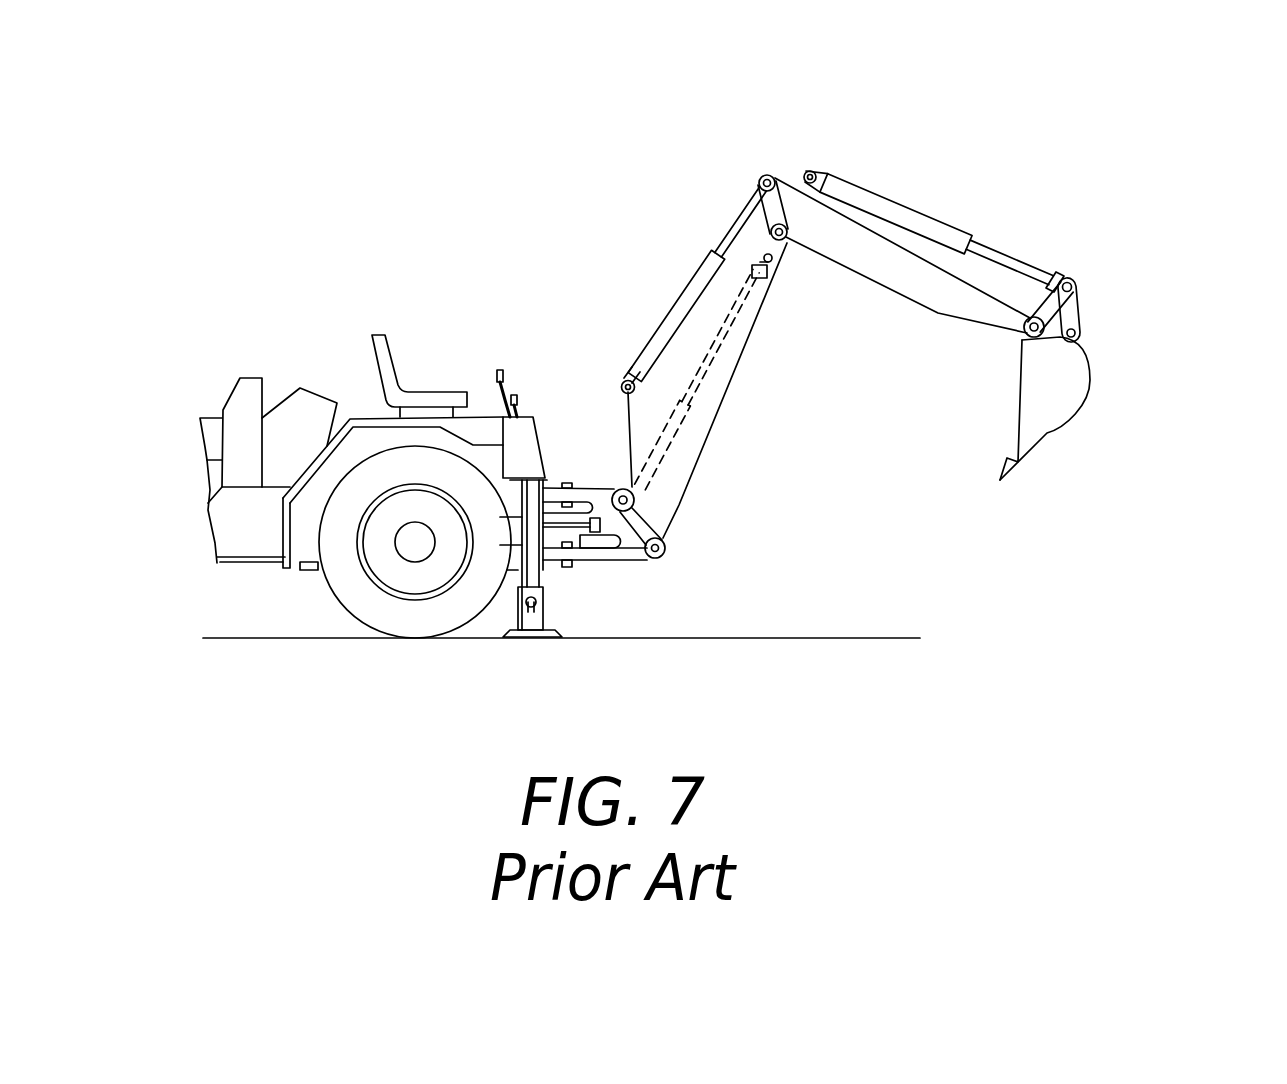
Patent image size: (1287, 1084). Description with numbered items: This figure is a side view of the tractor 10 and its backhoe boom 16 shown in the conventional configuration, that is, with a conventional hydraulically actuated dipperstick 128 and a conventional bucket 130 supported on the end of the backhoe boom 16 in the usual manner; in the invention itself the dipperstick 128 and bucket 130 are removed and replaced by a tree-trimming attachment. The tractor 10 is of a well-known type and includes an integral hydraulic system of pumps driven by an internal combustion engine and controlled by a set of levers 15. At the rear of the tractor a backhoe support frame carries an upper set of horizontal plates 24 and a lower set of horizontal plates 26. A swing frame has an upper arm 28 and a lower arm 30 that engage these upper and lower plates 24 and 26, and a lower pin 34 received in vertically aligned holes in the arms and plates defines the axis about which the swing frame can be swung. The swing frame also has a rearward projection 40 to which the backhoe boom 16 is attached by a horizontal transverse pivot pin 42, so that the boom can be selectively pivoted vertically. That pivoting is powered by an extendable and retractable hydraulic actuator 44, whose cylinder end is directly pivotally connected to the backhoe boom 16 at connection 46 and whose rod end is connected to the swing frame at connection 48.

The tractor 10 is at (237, 395).
The set of levers 15 is at (482, 374).
The upper set of horizontal plates 24 is at (557, 480).
The upper arm 28 is at (598, 486).
The lower set of horizontal plates 26 is at (553, 565).
The lower pin 34 is at (570, 566).
The lower arm 30 is at (633, 562).
The rearward projection 40 is at (638, 562).
The horizontal transverse pivot pin 42 is at (661, 553).
The rod end connection 48 is at (636, 504).
The backhoe boom 16 is at (704, 452).
The hydraulic actuator 44 is at (712, 368).
The cylinder end connection 46 is at (773, 258).
The dipperstick 128 is at (1012, 237).
The bucket 130 is at (1085, 375).